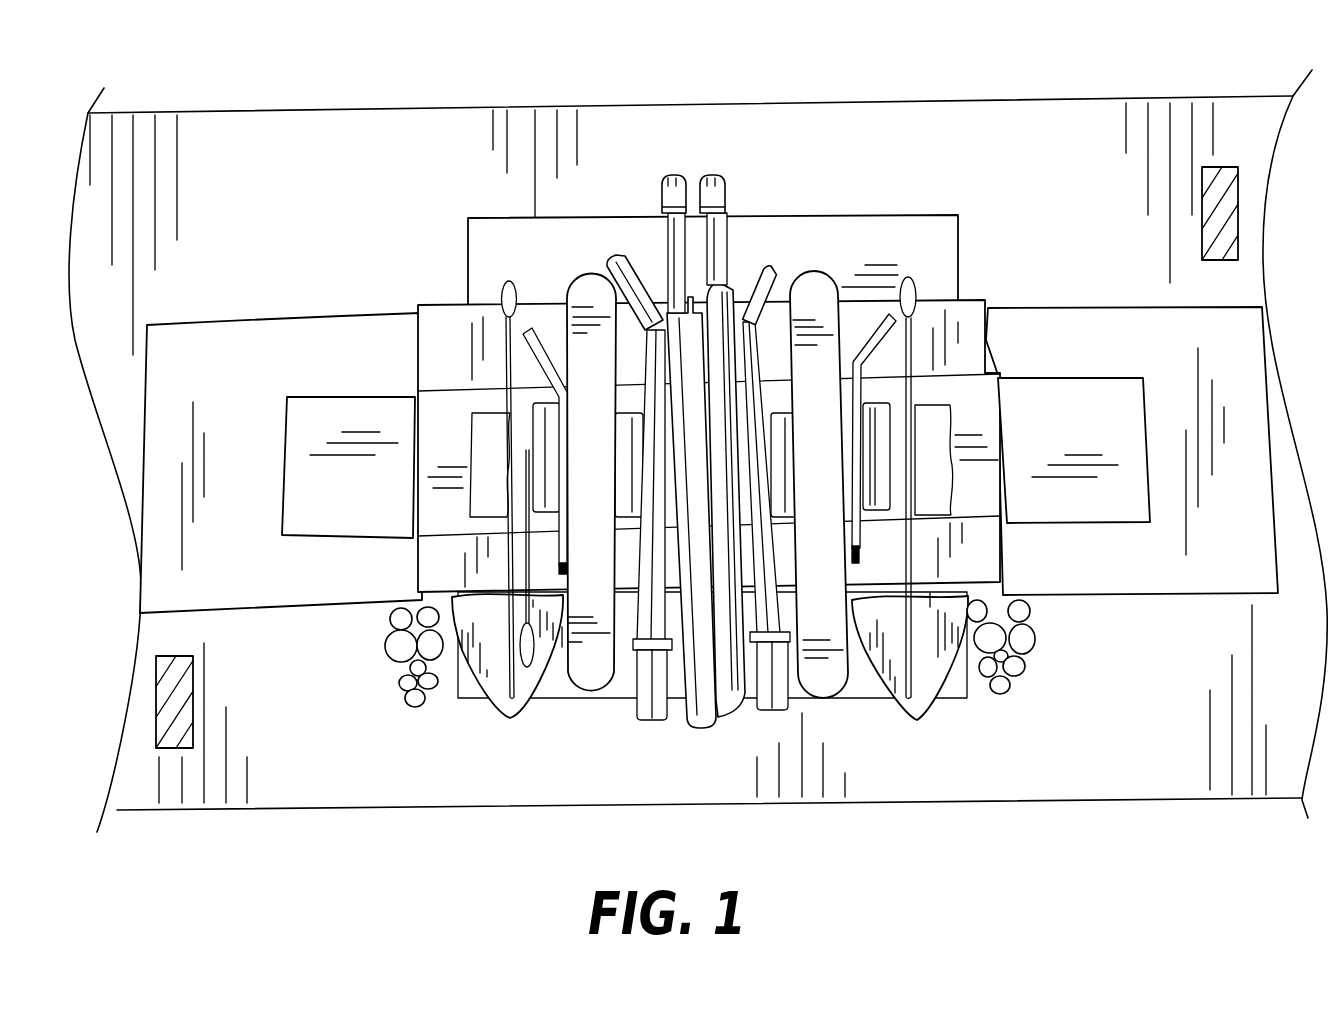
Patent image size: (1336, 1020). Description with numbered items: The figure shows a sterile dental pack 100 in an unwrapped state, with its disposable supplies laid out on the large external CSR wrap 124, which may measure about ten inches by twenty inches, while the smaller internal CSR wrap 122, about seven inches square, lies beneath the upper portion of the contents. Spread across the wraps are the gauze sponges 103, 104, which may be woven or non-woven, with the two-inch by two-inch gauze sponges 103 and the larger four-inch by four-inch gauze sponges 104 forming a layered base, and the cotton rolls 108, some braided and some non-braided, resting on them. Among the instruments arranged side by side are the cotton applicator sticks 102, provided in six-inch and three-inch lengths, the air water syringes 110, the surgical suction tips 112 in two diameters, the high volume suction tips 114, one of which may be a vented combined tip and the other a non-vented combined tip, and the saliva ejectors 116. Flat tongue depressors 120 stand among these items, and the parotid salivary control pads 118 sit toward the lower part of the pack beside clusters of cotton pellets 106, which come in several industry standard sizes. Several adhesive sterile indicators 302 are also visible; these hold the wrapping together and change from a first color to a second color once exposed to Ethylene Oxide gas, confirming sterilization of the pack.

The sterile dental pack 100 is at (203, 72).
The cotton applicator stick 102 is at (502, 283).
The gauze sponge 103 is at (318, 395).
The gauze sponge 104 is at (343, 313).
The cotton pellet 106 is at (388, 642).
The cotton roll 108 is at (487, 408).
The air water syringe 110 is at (547, 355).
The surgical suction tip 112 is at (627, 267).
The high volume suction tip 114 is at (685, 728).
The saliva ejector 116 is at (663, 202).
The parotid salivary control pad 118 is at (493, 712).
The tongue depressor 120 is at (572, 276).
The internal CSR wrap 122 is at (960, 230).
The external CSR wrap 124 is at (1104, 98).
The adhesive sterile indicator 302 is at (876, 221).